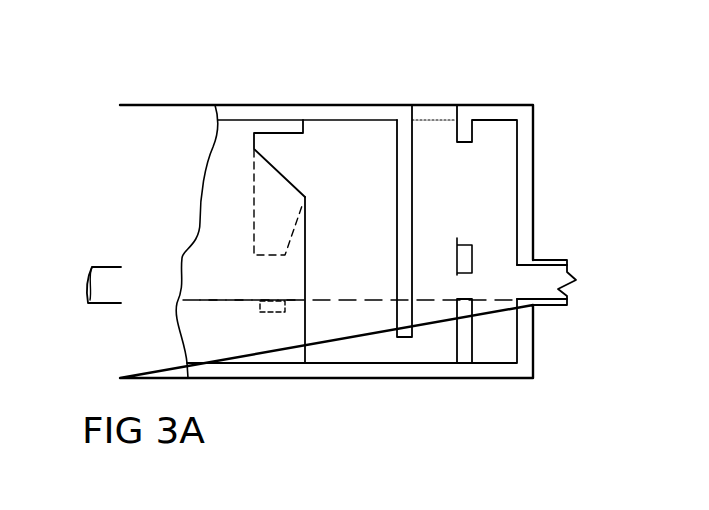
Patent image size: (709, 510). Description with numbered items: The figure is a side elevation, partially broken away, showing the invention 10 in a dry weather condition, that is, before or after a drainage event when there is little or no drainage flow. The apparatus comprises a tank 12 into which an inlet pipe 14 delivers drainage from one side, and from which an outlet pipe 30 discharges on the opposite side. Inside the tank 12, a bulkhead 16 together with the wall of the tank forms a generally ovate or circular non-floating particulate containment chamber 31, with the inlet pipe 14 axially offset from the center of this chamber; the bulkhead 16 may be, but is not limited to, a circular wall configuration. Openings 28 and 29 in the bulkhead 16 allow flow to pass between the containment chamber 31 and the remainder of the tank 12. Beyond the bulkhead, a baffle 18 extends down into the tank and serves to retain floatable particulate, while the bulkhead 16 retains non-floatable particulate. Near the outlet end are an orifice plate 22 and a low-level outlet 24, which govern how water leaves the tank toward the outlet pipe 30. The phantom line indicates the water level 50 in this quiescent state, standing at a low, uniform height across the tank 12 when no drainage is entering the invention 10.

The invention 10 is at (106, 60).
The tank 12 is at (160, 105).
The inlet pipe 14 is at (102, 267).
The bulkhead 16 is at (307, 207).
The baffle 18 is at (413, 140).
The orifice plate 22 is at (452, 287).
The low-level outlet 24 is at (477, 288).
The opening 28 is at (270, 172).
The opening 29 is at (283, 311).
The outlet pipe 30 is at (549, 255).
The non-floating particulate containment chamber 31 is at (198, 281).
The water level 50 is at (360, 298).